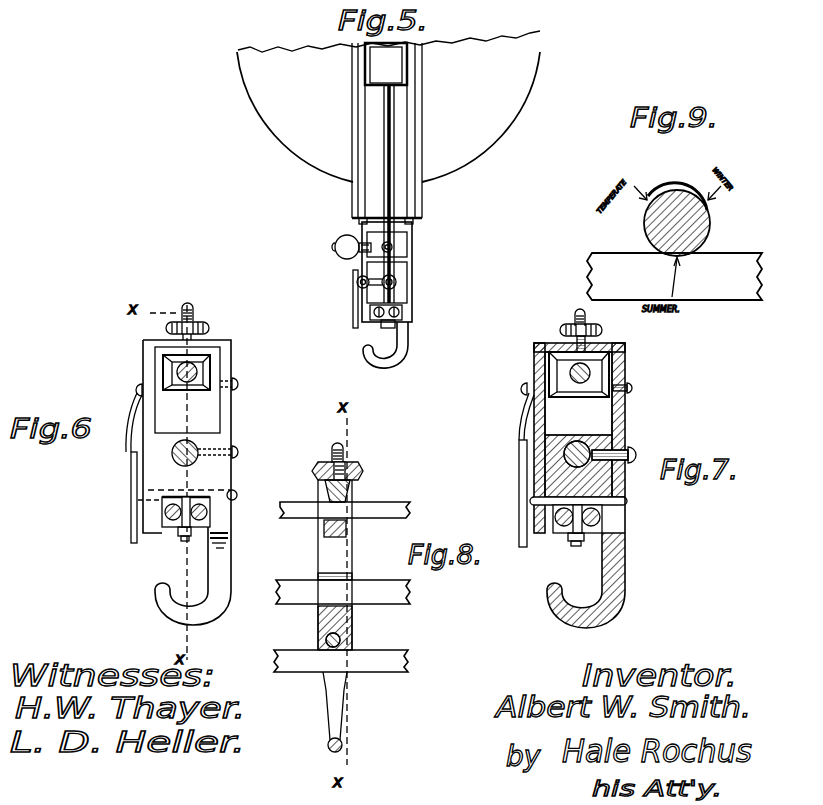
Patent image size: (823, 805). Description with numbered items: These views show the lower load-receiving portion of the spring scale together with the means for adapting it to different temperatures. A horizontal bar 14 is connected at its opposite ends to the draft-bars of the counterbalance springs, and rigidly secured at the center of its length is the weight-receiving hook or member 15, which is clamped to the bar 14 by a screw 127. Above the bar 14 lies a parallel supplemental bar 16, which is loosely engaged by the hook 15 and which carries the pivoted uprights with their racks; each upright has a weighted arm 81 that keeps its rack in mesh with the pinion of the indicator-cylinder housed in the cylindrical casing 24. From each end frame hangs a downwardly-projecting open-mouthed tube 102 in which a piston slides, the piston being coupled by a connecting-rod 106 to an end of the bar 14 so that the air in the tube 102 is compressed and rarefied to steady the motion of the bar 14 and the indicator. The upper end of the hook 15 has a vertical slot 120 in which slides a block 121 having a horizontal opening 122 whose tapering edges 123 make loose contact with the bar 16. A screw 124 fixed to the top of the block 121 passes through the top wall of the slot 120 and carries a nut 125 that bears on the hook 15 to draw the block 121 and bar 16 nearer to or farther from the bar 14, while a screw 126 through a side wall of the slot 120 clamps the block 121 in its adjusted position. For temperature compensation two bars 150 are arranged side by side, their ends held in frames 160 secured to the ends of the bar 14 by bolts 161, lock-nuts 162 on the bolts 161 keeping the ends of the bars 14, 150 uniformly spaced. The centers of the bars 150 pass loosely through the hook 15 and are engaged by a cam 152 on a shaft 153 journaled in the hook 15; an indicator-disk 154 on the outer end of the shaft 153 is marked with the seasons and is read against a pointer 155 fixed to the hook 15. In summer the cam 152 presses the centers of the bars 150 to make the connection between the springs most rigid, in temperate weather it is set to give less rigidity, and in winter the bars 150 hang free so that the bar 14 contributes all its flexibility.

In FIG. 5, the horizontal bar 14 is at (393, 280).
In FIG. 6, the horizontal bar 14 is at (195, 462).
In FIG. 8, the horizontal bar 14 is at (343, 615).
In FIG. 7, the horizontal bar 14 is at (585, 462).
In FIG. 5, the weight-receiving hook 15 is at (390, 362).
In FIG. 6, the weight-receiving hook 15 is at (205, 610).
In FIG. 8, the weight-receiving hook 15 is at (341, 748).
In FIG. 7, the weight-receiving hook 15 is at (615, 575).
In FIG. 6, the supplemental bar 16 is at (203, 370).
In FIG. 8, the supplemental bar 16 is at (372, 510).
In FIG. 7, the supplemental bar 16 is at (555, 365).
In FIG. 5, the cylindrical casing 24 is at (388, 117).
In FIG. 5, the weighted arm 81 is at (347, 244).
In FIG. 5, the tube 102 is at (378, 56).
In FIG. 5, the connecting-rod 106 is at (393, 140).
In FIG. 6, the vertical slot 120 is at (200, 415).
In FIG. 8, the vertical slot 120 is at (348, 568).
In FIG. 7, the vertical slot 120 is at (605, 413).
In FIG. 7, the block 121 is at (605, 380).
In FIG. 6, the horizontal opening 122 is at (176, 372).
In FIG. 8, the horizontal opening 122 is at (325, 526).
In FIG. 7, the horizontal opening 122 is at (590, 366).
In FIG. 6, the tapering edges 123 is at (182, 378).
In FIG. 8, the tapering edges 123 is at (336, 540).
In FIG. 7, the tapering edges 123 is at (575, 380).
In FIG. 6, the screw 124 is at (193, 308).
In FIG. 8, the screw 124 is at (343, 448).
In FIG. 7, the screw 124 is at (574, 314).
In FIG. 6, the nut 125 is at (208, 326).
In FIG. 8, the nut 125 is at (352, 470).
In FIG. 7, the nut 125 is at (560, 330).
In FIG. 6, the clamping screw 126 is at (238, 386).
In FIG. 7, the clamping screw 126 is at (632, 390).
In FIG. 6, the screw 127 is at (238, 452).
In FIG. 7, the screw 127 is at (630, 462).
In FIG. 5, the compensating bar 150 is at (372, 313).
In FIG. 9, the compensating bar 150 is at (674, 276).
In FIG. 6, the compensating bar 150 is at (165, 514).
In FIG. 8, the compensating bar 150 is at (341, 661).
In FIG. 7, the compensating bar 150 is at (556, 518).
In FIG. 9, the cam 152 is at (686, 191).
In FIG. 8, the cam 152 is at (329, 642).
In FIG. 7, the cam 152 is at (565, 506).
In FIG. 9, the shaft 153 is at (703, 229).
In FIG. 6, the shaft 153 is at (237, 493).
In FIG. 7, the shaft 153 is at (627, 501).
In FIG. 6, the indicator-disk 154 is at (131, 492).
In FIG. 7, the indicator-disk 154 is at (519, 474).
In FIG. 6, the pointer 155 is at (130, 417).
In FIG. 7, the pointer 155 is at (520, 422).
In FIG. 5, the frame 160 is at (400, 318).
In FIG. 5, the bolt 161 is at (393, 299).
In FIG. 6, the bolt 161 is at (191, 536).
In FIG. 7, the bolt 161 is at (584, 541).
In FIG. 6, the lock-nut 162 is at (179, 540).
In FIG. 7, the lock-nut 162 is at (568, 543).